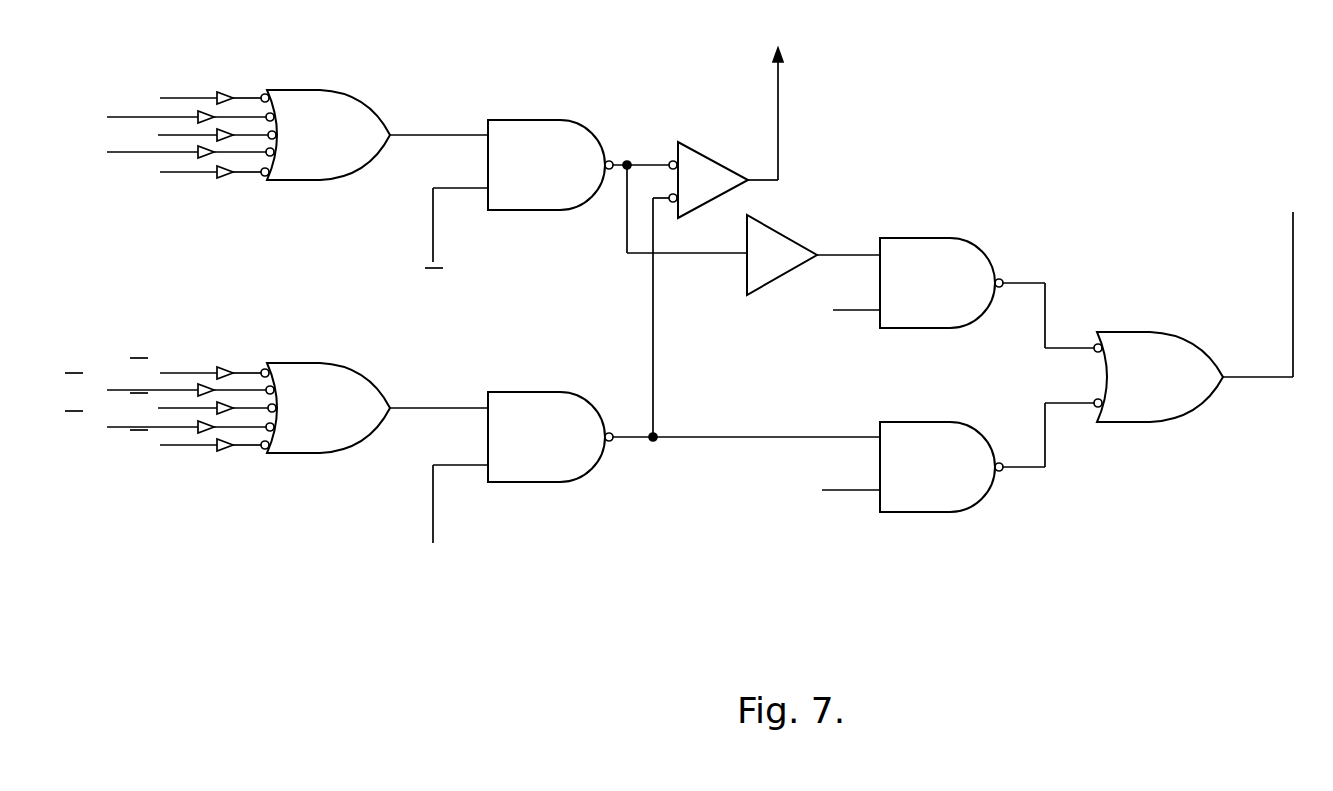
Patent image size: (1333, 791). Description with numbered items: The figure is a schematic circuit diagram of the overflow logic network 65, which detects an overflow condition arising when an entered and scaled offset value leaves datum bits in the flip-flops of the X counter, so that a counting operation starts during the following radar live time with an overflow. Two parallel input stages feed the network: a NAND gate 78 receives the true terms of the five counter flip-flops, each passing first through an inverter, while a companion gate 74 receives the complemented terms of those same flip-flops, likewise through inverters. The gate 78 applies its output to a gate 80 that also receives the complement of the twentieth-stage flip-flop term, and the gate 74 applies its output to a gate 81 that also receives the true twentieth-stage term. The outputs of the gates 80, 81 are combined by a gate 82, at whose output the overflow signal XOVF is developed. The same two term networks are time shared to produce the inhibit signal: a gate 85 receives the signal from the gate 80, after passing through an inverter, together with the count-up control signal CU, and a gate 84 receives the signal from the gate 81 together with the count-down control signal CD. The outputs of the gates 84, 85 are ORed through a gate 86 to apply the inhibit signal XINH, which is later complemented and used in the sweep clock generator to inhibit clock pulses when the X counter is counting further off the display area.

The logic network 65 is at (1094, 514).
The gate 74 is at (340, 370).
The NAND gate 78 is at (367, 120).
The gate 80 is at (563, 135).
The gate 81 is at (552, 403).
The gate 82 is at (695, 158).
The gate 84 is at (957, 428).
The gate 85 is at (957, 248).
The gate 86 is at (1155, 343).